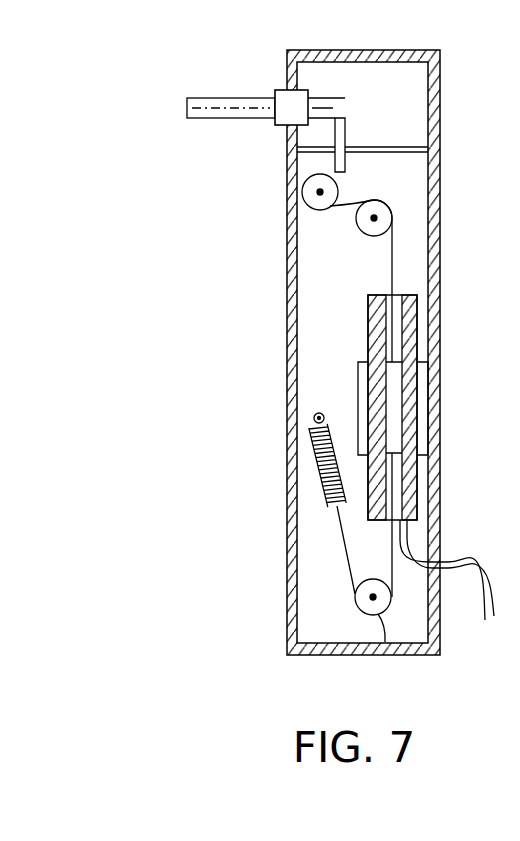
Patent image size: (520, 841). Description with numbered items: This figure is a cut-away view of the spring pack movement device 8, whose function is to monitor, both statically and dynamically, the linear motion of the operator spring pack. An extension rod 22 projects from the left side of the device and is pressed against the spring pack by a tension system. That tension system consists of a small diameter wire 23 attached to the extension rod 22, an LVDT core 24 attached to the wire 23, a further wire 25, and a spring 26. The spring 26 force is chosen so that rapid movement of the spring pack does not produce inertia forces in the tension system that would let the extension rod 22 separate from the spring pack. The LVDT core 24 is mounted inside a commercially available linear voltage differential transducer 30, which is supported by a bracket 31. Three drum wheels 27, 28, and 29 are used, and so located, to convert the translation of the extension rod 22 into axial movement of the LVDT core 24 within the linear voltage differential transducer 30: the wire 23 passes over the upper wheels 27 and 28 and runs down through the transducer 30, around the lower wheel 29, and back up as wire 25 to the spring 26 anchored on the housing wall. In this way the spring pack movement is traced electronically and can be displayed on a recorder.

The spring pack movement device 8 is at (440, 332).
The extension rod 22 is at (222, 98).
The small diameter wire 23 is at (396, 283).
The LVDT core 24 is at (396, 426).
The wire 25 is at (345, 556).
The spring 26 is at (313, 423).
The drum wheel 27 is at (316, 193).
The drum wheel 28 is at (395, 211).
The drum wheel 29 is at (382, 656).
The linear voltage differential transducer 30 is at (419, 489).
The bracket 31 is at (422, 442).